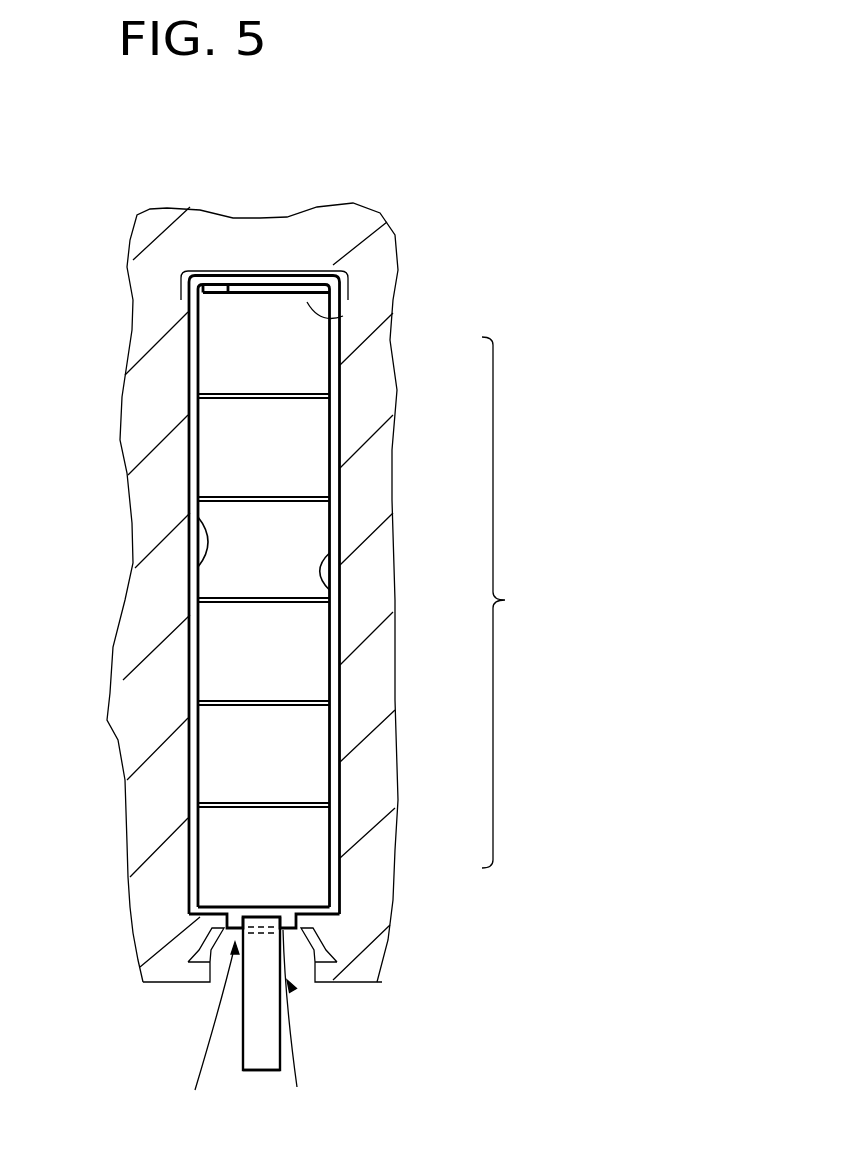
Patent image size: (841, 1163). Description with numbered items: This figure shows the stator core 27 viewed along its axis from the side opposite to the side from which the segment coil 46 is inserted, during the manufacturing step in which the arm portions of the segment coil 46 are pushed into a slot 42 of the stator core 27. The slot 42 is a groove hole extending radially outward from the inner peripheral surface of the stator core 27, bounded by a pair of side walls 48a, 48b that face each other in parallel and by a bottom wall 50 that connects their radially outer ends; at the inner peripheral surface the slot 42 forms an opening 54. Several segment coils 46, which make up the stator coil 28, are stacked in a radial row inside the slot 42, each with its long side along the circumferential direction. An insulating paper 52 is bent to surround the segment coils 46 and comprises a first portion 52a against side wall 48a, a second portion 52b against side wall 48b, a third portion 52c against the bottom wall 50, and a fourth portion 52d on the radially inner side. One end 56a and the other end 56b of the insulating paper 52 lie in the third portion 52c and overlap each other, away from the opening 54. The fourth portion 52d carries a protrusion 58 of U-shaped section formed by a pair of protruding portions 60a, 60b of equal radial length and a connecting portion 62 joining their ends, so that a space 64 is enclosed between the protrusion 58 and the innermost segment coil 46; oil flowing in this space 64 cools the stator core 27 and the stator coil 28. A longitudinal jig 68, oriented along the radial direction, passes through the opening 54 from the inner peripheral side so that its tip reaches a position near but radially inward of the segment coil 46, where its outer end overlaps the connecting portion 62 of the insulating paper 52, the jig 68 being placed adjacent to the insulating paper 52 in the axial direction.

The stator core 27 is at (160, 363).
The stator coil 28 is at (512, 602).
The slot 42 is at (170, 615).
The segment coil 46 is at (292, 352).
The side wall 48a is at (195, 522).
The side wall 48b is at (330, 575).
The bottom wall 50 is at (343, 316).
The insulating paper 52 is at (239, 545).
The first portion 52a is at (188, 745).
The second portion 52b is at (332, 722).
The third portion 52c is at (210, 270).
The fourth portion 52d is at (228, 918).
The opening 54 is at (292, 995).
The one end 56a is at (235, 272).
The other end 56b is at (247, 293).
The protrusion 58 is at (228, 965).
The protruding portion 60a is at (207, 925).
The protruding portion 60b is at (317, 926).
The connecting portion 62 is at (292, 985).
The space 64 is at (238, 903).
The jig 68 is at (270, 1047).